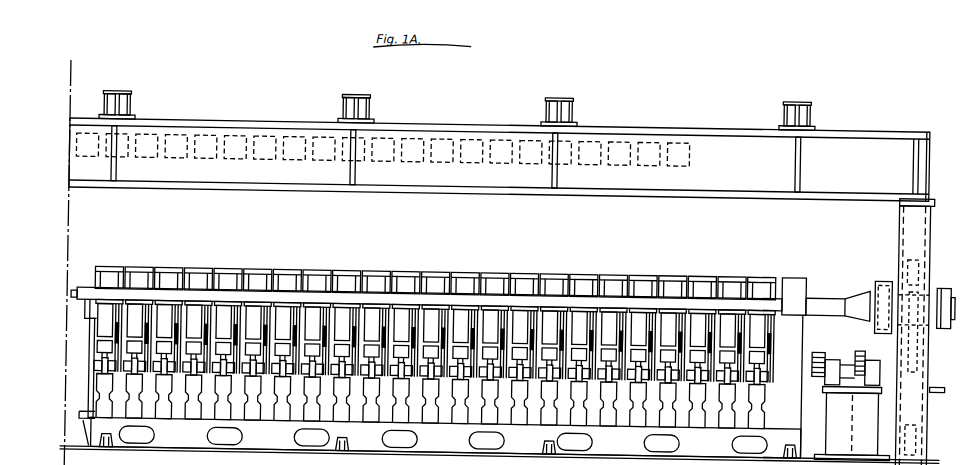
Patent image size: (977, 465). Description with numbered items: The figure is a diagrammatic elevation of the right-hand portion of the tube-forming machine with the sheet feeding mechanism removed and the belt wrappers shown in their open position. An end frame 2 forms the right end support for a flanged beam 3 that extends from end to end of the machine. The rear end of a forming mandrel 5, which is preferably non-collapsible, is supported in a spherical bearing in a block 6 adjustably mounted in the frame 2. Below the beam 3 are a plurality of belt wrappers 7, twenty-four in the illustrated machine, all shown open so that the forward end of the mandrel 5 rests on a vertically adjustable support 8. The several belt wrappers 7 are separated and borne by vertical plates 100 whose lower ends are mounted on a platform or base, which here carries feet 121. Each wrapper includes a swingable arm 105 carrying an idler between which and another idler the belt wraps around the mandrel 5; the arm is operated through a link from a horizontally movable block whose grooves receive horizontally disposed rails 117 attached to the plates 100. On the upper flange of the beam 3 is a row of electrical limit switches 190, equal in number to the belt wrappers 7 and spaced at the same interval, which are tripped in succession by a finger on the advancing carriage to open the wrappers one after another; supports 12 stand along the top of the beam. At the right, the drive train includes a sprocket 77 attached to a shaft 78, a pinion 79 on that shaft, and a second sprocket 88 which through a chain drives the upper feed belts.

The flanged beam 3 is at (722, 118).
The beam support brackets 12 is at (118, 91).
The electrical limit switches 190 is at (205, 133).
The forming mandrel 5 is at (494, 297).
The belt wrappers 7 is at (545, 261).
The vertically adjustable support 8 is at (93, 318).
The swingable arm 105 is at (110, 352).
The rails 117 is at (100, 369).
The vertical plates 100 is at (125, 399).
The base feet 121 is at (181, 433).
The second sprocket 88 is at (818, 340).
The sprocket 77 is at (833, 347).
The shaft 78 is at (857, 350).
The pinion 79 is at (872, 349).
The block 6 is at (883, 268).
The frame 2 is at (918, 353).